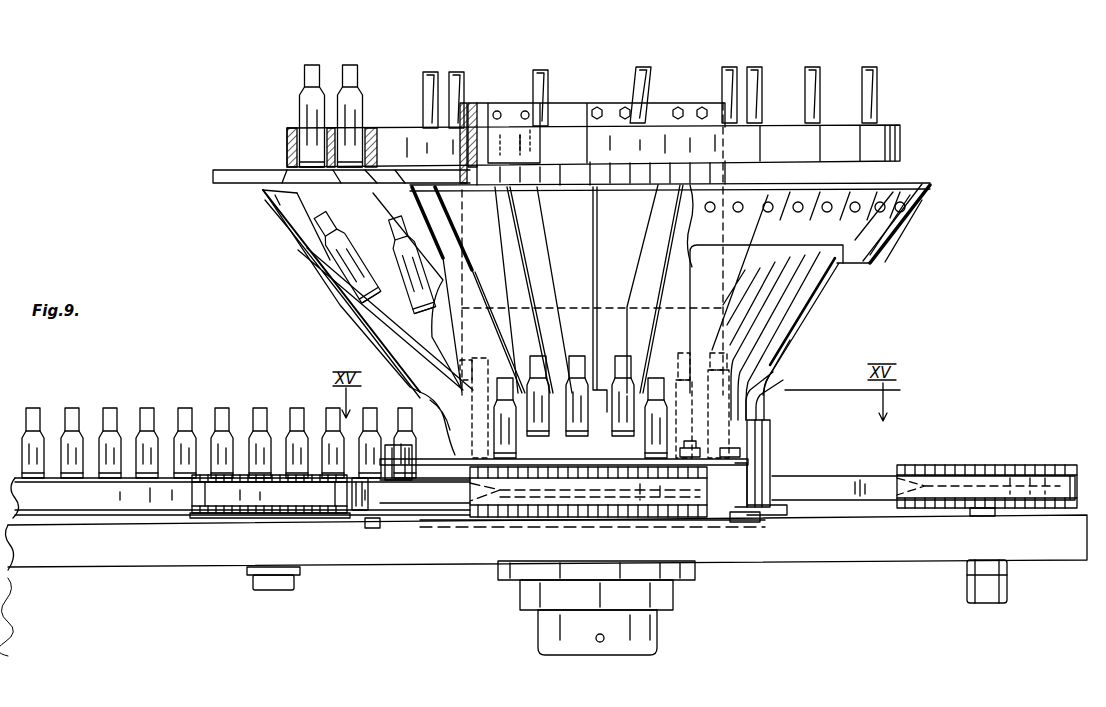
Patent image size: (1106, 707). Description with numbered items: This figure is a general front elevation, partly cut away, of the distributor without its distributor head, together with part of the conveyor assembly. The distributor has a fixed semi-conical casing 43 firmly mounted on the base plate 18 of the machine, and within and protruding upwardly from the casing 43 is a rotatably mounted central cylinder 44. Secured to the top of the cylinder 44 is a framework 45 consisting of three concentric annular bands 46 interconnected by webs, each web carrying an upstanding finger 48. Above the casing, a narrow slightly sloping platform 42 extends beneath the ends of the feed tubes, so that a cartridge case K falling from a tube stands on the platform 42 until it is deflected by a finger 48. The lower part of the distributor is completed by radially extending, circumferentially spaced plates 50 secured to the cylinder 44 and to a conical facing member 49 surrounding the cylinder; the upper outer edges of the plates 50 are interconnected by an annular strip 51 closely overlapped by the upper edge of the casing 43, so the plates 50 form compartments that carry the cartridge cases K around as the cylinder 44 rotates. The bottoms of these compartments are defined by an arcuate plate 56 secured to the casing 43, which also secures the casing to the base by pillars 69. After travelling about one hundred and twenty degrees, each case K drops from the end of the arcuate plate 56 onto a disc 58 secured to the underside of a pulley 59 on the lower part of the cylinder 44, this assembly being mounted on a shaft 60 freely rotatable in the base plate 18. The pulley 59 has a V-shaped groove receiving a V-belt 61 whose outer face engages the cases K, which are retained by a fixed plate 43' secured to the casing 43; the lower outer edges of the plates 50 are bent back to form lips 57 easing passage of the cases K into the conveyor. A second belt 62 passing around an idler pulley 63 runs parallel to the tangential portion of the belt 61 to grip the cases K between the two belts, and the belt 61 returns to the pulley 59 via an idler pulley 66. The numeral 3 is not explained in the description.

The conveyor rail 3 is at (236, 475).
The base plate 18 is at (845, 554).
The platform 42 is at (240, 170).
The semi-conical casing 43 is at (586, 319).
The fixed plate 43' is at (817, 427).
The central cylinder 44 is at (680, 102).
The framework 45 is at (900, 143).
The annular bands 46 is at (330, 128).
The finger 48 is at (455, 70).
The conical facing member 49 is at (562, 202).
The plates 50 is at (540, 287).
The annular strip 51 is at (341, 291).
The arcuate plate 56 is at (422, 497).
The lips 57 is at (528, 372).
The disc 58 is at (460, 522).
The pulley 59 is at (486, 506).
The shaft 60 is at (690, 561).
The V-belt 61 is at (365, 490).
The second belt 62 is at (842, 480).
The idler pulley 63 is at (950, 468).
The idler pulley 66 is at (218, 512).
The pillars 69 is at (385, 520).
The cartridge case K is at (400, 268).